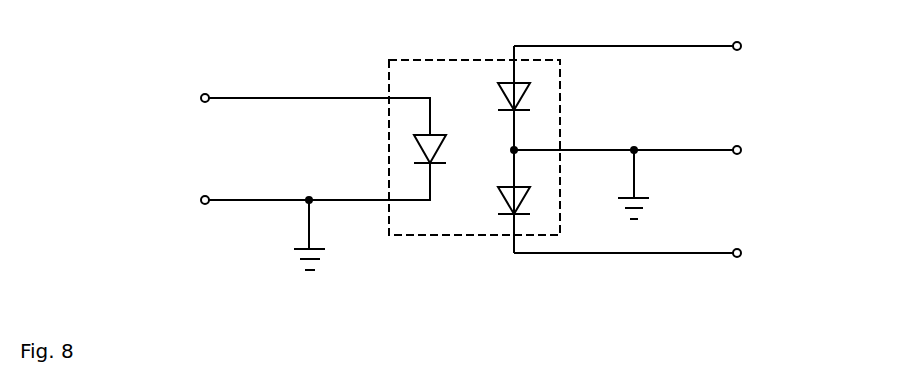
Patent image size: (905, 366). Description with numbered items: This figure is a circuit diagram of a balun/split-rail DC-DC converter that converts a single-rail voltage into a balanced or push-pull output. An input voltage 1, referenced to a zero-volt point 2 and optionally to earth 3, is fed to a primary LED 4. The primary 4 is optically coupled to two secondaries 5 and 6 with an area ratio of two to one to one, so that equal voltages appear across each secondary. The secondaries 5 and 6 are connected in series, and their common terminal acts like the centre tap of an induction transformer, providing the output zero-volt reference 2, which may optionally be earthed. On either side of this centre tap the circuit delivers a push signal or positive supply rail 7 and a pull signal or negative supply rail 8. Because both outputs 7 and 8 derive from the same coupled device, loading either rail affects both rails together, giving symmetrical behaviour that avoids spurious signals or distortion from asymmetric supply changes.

The input voltage 1 is at (306, 94).
The 0V reference 2 is at (495, 178).
The earth 3 is at (321, 245).
The primary LED 4 is at (444, 149).
The first secondary 5 is at (503, 97).
The second secondary 6 is at (501, 200).
The positive supply rail 7 is at (665, 46).
The negative supply rail 8 is at (659, 255).